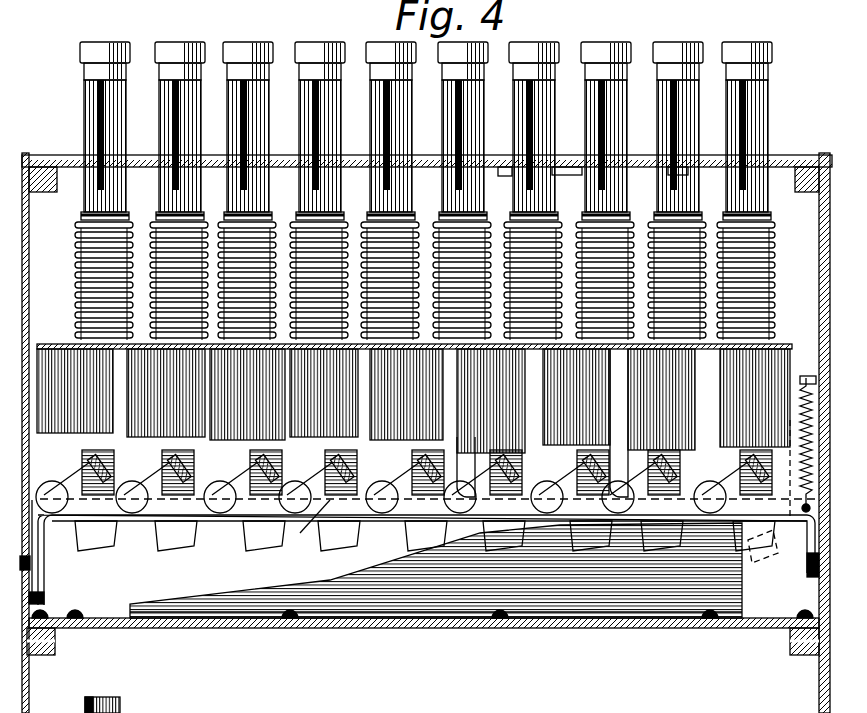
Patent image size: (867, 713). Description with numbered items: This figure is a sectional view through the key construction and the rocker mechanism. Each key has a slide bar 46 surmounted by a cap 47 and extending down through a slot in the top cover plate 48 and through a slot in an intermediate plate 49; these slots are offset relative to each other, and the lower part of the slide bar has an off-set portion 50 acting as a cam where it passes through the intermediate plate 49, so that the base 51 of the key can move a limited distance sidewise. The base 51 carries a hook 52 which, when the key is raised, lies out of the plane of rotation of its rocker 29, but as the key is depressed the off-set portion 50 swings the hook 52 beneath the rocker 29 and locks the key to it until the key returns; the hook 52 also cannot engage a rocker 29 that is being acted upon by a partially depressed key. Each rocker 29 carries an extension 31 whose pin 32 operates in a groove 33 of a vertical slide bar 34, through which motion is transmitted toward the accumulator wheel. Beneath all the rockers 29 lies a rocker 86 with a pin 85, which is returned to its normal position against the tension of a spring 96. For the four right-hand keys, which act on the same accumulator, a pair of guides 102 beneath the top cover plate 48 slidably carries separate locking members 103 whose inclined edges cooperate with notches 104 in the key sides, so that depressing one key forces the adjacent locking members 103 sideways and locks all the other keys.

The rocker 29 is at (250, 457).
The extension 31 is at (113, 463).
The pin 32 is at (82, 465).
The groove 33 is at (310, 526).
The slide bar 34 is at (200, 490).
The slide bar 46 is at (165, 123).
The cap 47 is at (163, 50).
The top cover plate 48 is at (282, 155).
The intermediate plate 49 is at (366, 399).
The off-set portion 50 is at (368, 397).
The base 51 is at (428, 398).
The hook 52 is at (700, 535).
The pin 85 is at (40, 592).
The rocker 86 is at (37, 543).
The spring 96 is at (804, 380).
The guides 102 is at (503, 166).
The locking member 103 is at (564, 167).
The notch 104 is at (677, 160).